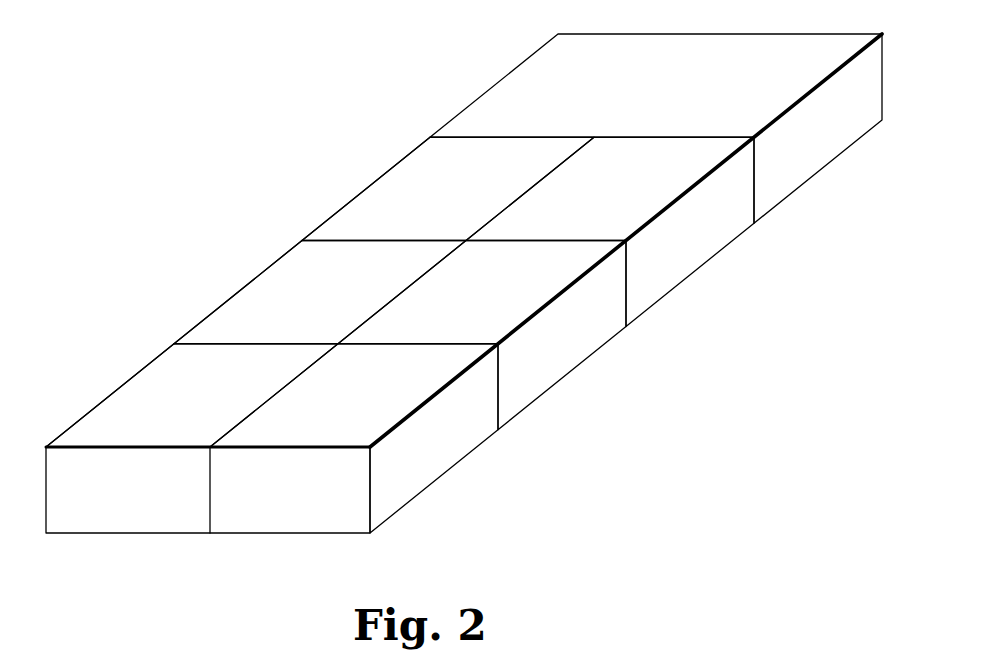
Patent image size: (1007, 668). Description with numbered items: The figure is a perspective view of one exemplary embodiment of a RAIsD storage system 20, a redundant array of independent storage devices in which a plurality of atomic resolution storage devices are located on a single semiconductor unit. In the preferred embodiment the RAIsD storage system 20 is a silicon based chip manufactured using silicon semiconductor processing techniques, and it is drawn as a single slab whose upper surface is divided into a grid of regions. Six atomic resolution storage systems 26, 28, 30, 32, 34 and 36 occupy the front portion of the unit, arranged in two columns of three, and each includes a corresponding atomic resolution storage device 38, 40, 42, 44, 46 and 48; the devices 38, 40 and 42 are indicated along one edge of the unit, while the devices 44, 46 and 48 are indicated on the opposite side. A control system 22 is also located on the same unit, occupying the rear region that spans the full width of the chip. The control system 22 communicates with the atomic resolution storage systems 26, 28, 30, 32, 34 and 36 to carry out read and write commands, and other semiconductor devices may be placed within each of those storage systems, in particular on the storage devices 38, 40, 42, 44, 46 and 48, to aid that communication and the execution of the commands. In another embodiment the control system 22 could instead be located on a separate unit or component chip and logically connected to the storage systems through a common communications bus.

The RAIsD storage system 20 is at (241, 84).
The control system 22 is at (671, 95).
The atomic resolution storage system 26 is at (452, 202).
The atomic resolution storage system 28 is at (331, 307).
The atomic resolution storage system 30 is at (201, 413).
The atomic resolution storage system 32 is at (622, 202).
The atomic resolution storage system 34 is at (497, 305).
The atomic resolution storage system 36 is at (357, 413).
The atomic resolution storage device 38 is at (372, 183).
The atomic resolution storage device 40 is at (250, 282).
The atomic resolution storage device 42 is at (115, 390).
The atomic resolution storage device 44 is at (685, 248).
The atomic resolution storage device 46 is at (535, 365).
The atomic resolution storage device 48 is at (423, 450).